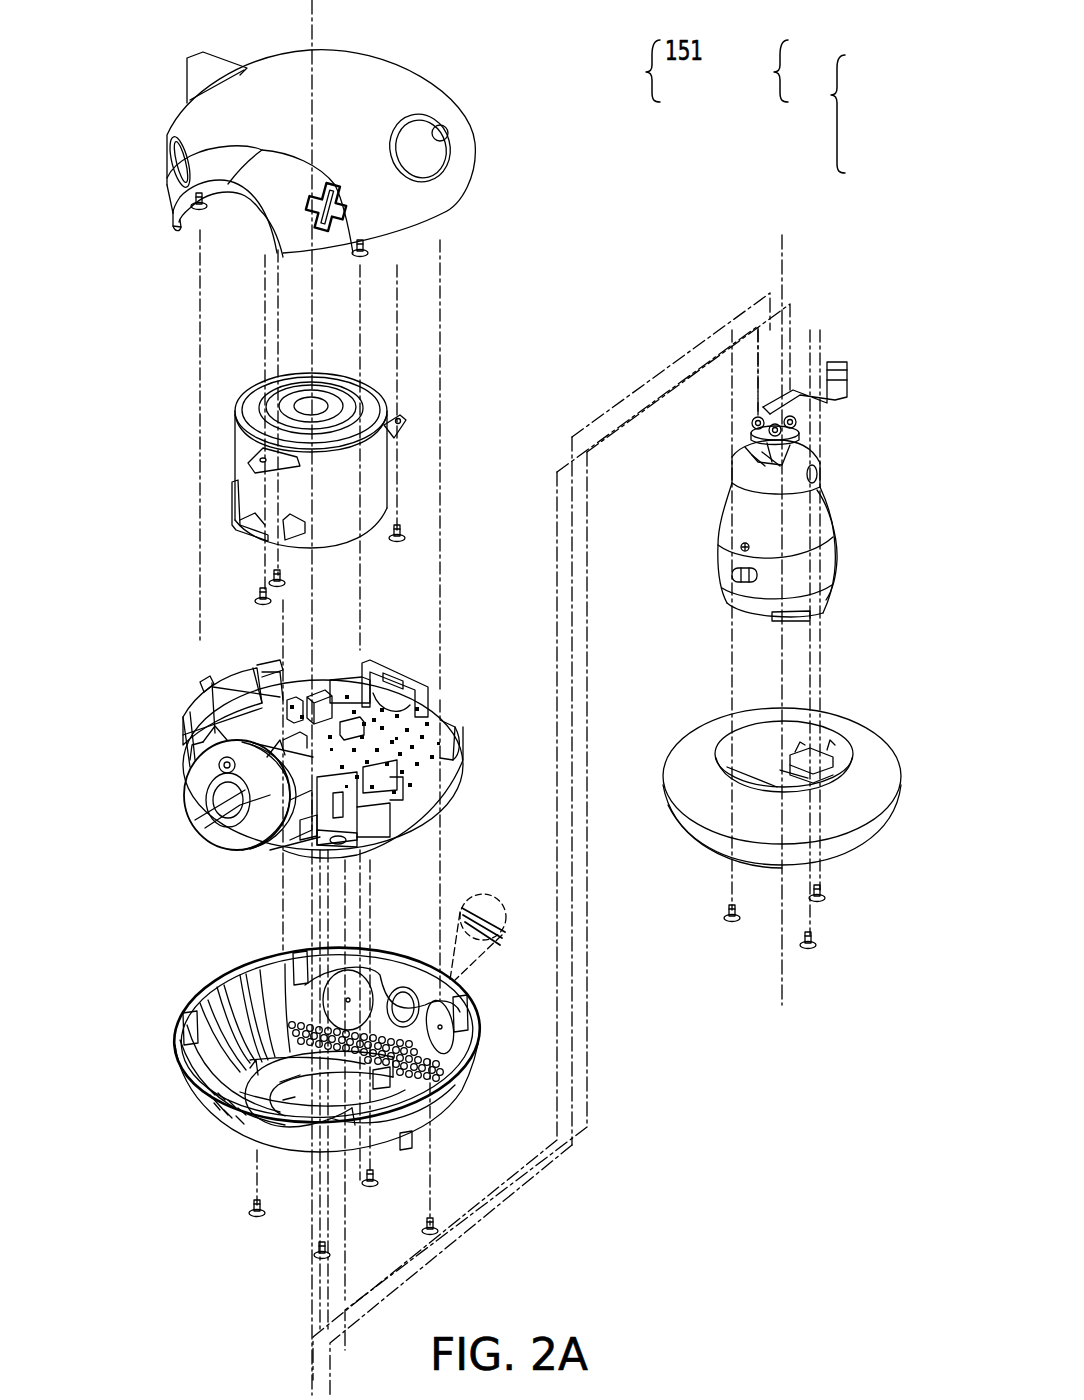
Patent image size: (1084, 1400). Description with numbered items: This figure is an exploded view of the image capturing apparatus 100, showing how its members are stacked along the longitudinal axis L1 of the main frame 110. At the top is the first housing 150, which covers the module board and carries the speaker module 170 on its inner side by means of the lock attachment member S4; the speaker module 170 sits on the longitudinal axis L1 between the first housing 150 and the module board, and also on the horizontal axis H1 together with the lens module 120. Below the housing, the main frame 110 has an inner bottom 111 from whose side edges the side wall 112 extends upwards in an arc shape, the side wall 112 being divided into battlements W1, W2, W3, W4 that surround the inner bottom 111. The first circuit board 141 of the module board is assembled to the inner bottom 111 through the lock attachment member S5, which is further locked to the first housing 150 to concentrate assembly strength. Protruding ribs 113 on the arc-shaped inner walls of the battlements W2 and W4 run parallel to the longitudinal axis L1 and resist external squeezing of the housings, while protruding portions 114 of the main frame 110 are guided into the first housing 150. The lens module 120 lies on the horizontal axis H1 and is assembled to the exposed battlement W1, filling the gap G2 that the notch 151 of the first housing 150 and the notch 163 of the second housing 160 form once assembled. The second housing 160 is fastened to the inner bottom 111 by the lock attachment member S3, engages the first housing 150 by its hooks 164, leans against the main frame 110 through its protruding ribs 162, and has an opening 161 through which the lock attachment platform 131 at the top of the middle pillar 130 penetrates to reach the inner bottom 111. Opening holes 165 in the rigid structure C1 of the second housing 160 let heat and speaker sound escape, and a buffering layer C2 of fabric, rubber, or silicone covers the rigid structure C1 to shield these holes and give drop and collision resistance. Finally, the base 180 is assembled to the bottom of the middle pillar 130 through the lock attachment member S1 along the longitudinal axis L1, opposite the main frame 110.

The image capturing apparatus 100 is at (823, 1250).
The main frame 110 is at (777, 67).
The inner bottom 111 is at (380, 850).
The side wall 112 is at (833, 112).
The protruding ribs 113 is at (270, 680).
The protruding portions 114 is at (210, 700).
The lens module 120 is at (200, 773).
The middle pillar 130 is at (852, 513).
The lock attachment platform 131 is at (803, 420).
The first circuit board 141 is at (425, 742).
The first housing 150 is at (462, 60).
The notch 151 is at (220, 220).
The second housing 160 is at (160, 995).
The opening 161 is at (205, 1068).
The protruding ribs 162 is at (245, 978).
The notch 163 is at (140, 1160).
The hooks 164 is at (300, 958).
The opening holes 165 is at (462, 1050).
The speaker module 170 is at (222, 448).
The base 180 is at (873, 692).
The gap G2 is at (635, 71).
The battlement W1 is at (305, 806).
The battlement W2 is at (428, 800).
The battlement W3 is at (393, 680).
The battlement W4 is at (205, 705).
The lock attachment member S1 is at (835, 897).
The lock attachment member S3 is at (242, 1215).
The lock attachment member S4 is at (417, 530).
The lock attachment member S5 is at (290, 700).
The horizontal axis H1 is at (195, 820).
The rigid structure C1 is at (495, 932).
The buffering layer C2 is at (500, 910).
The longitudinal axis L1 is at (553, 697).